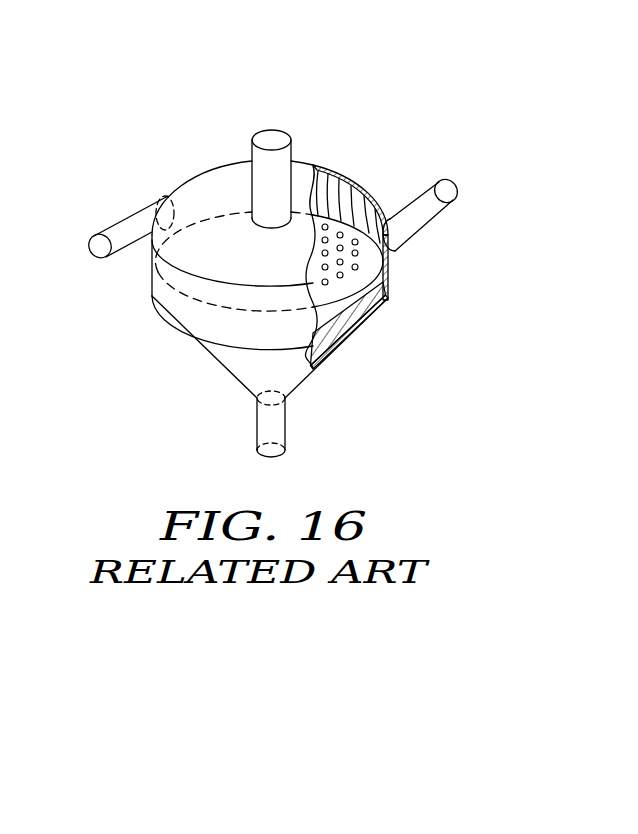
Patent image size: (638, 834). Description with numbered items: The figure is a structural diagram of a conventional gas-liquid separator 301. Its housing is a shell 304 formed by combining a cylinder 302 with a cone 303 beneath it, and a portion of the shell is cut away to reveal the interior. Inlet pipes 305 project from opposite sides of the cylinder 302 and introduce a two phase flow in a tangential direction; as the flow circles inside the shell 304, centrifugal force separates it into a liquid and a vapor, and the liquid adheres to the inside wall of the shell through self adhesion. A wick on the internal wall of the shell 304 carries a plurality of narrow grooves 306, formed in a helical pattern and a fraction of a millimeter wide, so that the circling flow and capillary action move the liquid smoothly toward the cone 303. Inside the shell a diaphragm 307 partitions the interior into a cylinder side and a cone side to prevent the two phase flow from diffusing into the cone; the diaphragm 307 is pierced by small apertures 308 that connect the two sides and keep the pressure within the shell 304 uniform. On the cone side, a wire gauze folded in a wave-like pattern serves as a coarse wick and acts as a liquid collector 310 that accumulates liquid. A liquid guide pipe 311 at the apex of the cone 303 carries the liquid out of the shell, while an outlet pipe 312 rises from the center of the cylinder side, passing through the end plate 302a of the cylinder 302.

The gas-liquid separator 301 is at (310, 97).
The cylinder 302 is at (154, 298).
The end plate 302a is at (202, 172).
The cone 303 is at (238, 360).
The shell 304 is at (380, 192).
The inlet pipe 305 is at (125, 222).
The narrow grooves 306 is at (320, 177).
The diaphragm 307 is at (387, 293).
The small apertures 308 is at (358, 252).
The liquid collector 310 is at (328, 327).
The liquid guide pipe 311 is at (285, 423).
The outlet pipe 312 is at (267, 133).